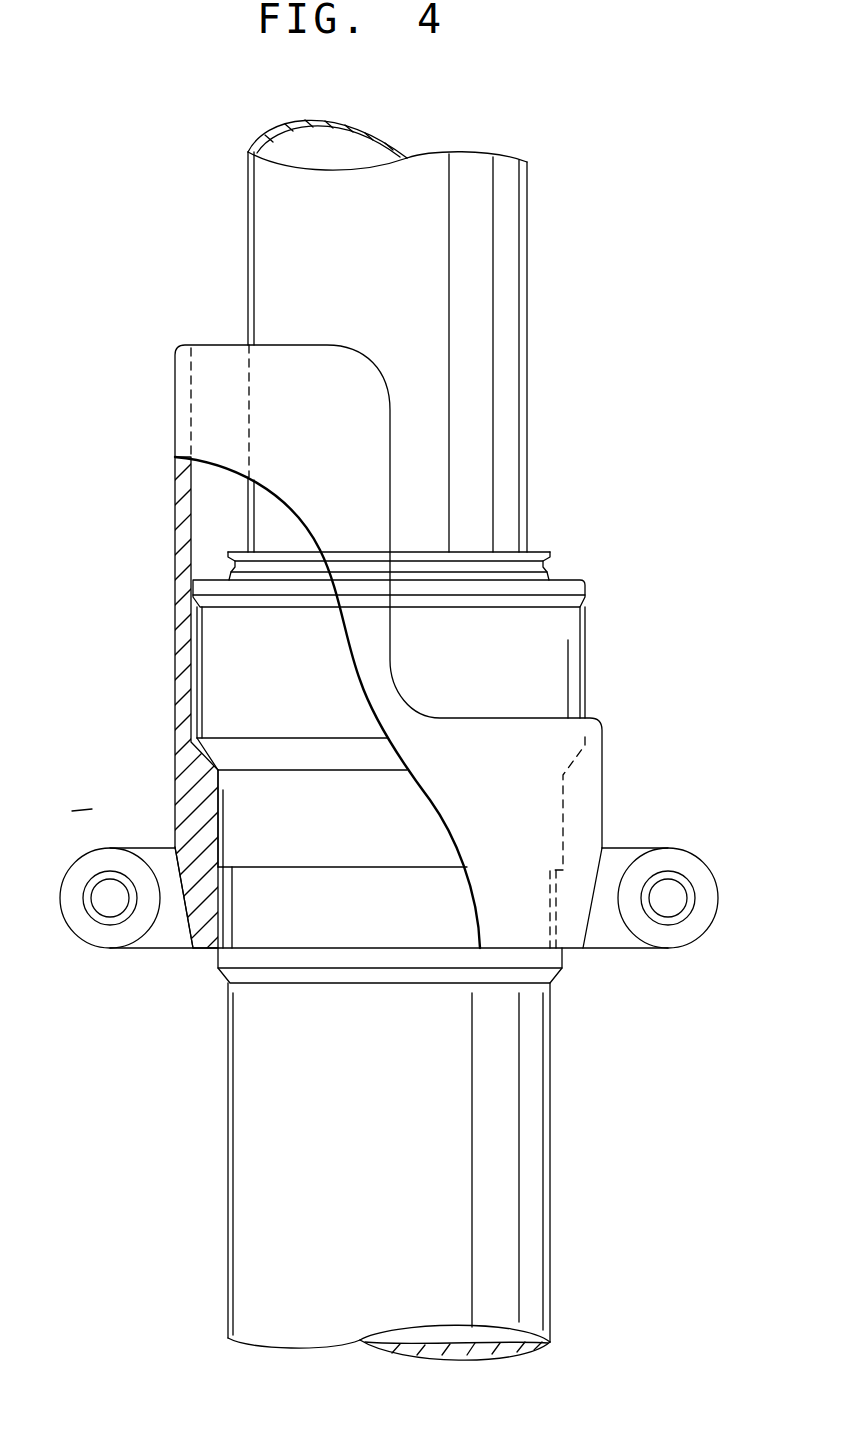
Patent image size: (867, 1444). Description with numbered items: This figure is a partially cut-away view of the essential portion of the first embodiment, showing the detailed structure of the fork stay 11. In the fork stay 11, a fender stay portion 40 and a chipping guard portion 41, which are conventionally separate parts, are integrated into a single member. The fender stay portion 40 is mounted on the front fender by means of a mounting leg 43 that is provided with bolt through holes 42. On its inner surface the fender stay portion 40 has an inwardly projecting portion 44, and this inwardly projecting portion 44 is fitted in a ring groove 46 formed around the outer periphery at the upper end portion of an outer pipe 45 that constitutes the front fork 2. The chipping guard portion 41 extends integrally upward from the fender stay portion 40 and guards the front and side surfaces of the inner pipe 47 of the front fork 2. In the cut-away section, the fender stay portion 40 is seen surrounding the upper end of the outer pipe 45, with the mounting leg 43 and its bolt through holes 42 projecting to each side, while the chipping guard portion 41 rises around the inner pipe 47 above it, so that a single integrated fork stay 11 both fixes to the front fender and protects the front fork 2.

The front fork 2 is at (600, 503).
The fork stay 11 is at (93, 622).
The fender stay portion 40 is at (187, 807).
The chipping guard portion 41 is at (178, 420).
The bolt through holes 42 is at (103, 905).
The mounting leg 43 is at (165, 932).
The inwardly projecting portion 44 is at (227, 908).
The outer pipe 45 is at (528, 1083).
The ring groove 46 is at (300, 935).
The inner pipe 47 is at (503, 389).